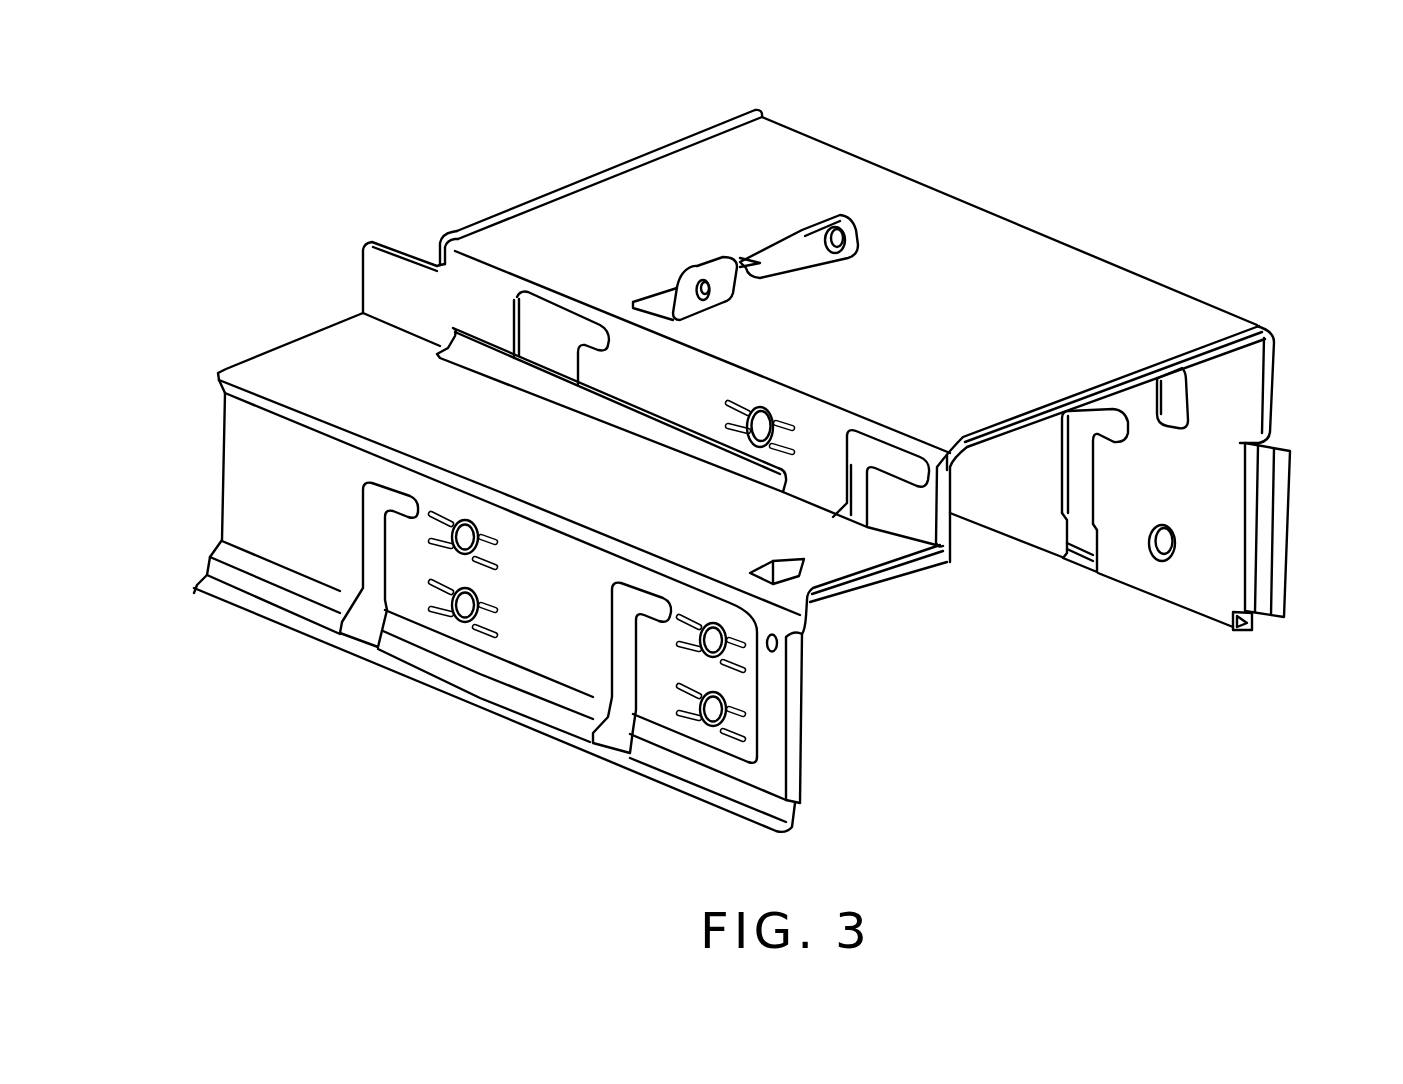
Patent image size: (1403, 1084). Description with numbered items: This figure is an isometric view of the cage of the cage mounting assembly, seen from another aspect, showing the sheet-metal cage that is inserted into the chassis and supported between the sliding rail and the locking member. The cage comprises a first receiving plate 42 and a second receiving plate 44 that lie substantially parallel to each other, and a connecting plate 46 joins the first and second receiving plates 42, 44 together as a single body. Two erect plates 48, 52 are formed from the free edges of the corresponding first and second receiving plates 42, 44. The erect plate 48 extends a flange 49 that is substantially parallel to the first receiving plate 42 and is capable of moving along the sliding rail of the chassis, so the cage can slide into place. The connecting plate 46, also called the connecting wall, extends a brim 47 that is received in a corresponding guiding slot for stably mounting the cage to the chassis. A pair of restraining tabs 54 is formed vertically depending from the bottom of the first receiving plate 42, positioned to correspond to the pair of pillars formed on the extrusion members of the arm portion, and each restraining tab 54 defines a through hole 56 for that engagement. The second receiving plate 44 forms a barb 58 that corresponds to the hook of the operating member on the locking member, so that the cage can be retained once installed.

The first receiving plate 42 is at (1070, 300).
The second receiving plate 44 is at (370, 402).
The connecting plate 46 is at (460, 285).
The brim 47 is at (490, 353).
The erect plate 48 is at (1217, 483).
The flange 49 is at (1253, 622).
The erect plate 52 is at (283, 473).
The restraining tab 54 is at (817, 241).
The through hole 56 is at (857, 242).
The barb 58 is at (792, 577).